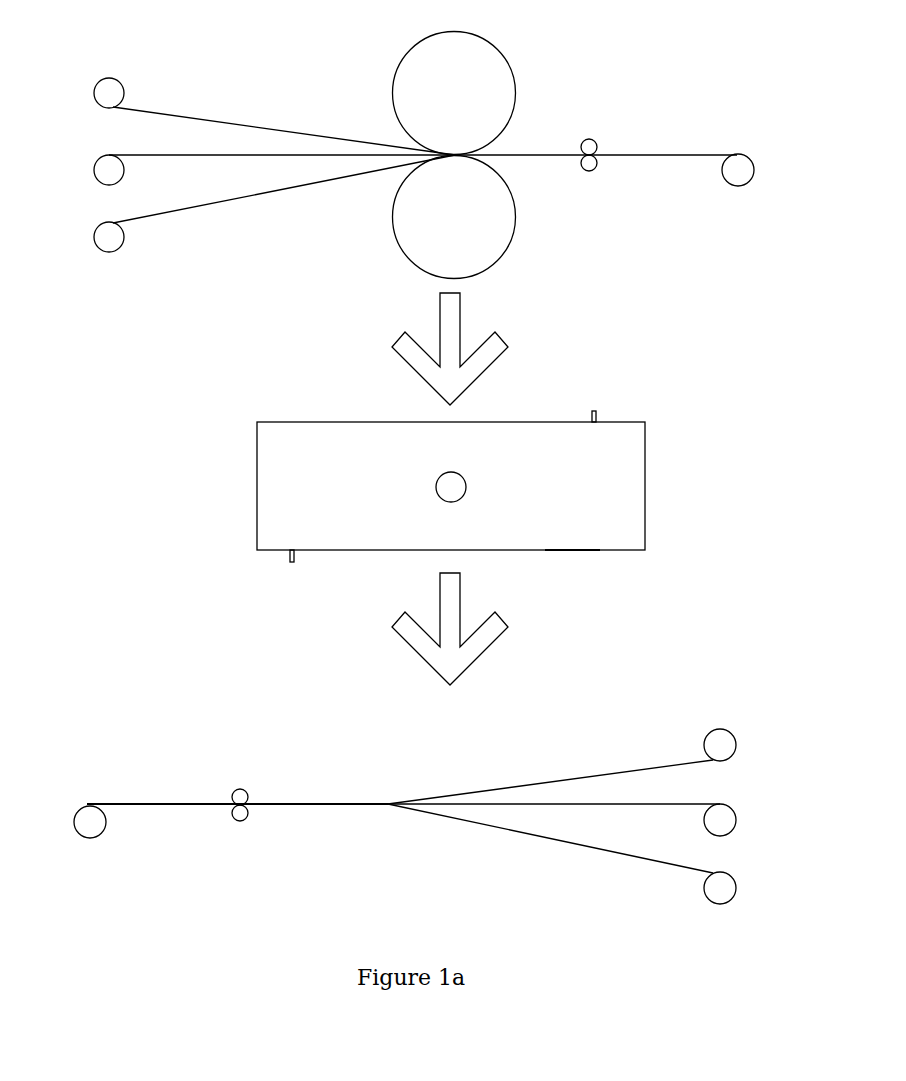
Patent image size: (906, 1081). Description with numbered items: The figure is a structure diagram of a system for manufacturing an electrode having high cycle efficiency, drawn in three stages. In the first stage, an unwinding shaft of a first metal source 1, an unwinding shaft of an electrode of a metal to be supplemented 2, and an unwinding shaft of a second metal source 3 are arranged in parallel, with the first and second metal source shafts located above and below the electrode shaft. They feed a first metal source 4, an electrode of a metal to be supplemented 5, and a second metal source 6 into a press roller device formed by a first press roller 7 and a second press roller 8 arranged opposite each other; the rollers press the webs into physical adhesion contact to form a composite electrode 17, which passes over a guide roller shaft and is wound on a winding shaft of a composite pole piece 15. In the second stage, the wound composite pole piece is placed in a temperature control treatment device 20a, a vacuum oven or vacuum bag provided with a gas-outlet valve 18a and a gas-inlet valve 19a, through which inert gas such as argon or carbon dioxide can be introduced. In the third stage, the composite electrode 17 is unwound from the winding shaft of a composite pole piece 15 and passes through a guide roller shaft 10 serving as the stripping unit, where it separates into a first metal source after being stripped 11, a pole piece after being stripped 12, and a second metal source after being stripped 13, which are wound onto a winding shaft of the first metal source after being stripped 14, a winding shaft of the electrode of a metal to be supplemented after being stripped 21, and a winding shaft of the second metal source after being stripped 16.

The unwinding shaft of a first metal source 1 is at (91, 74).
The unwinding shaft of an electrode of a metal to be supplemented 2 is at (82, 170).
The unwinding shaft of a second metal source 3 is at (102, 256).
The first metal source 4 is at (284, 119).
The electrode of a metal to be supplemented 5 is at (282, 145).
The second metal source 6 is at (284, 189).
The first press roller 7 is at (454, 93).
The second press roller 8 is at (454, 217).
The guide roller shaft 10 is at (229, 822).
The first metal source after being stripped 11 is at (550, 768).
The pole piece after being stripped 12 is at (554, 794).
The second metal source after being stripped 13 is at (550, 838).
The winding shaft of the first metal source after being stripped 14 is at (743, 738).
The winding shaft of a composite pole piece 15 is at (414, 517).
The winding shaft of the second metal source after being stripped 16 is at (738, 889).
The composite electrode 17 is at (412, 472).
The gas-outlet valve 18a is at (620, 405).
The gas-inlet valve 19a is at (293, 573).
The temperature control treatment device 20a is at (572, 563).
The winding shaft of the electrode of a metal to be supplemented after being strippe 21 is at (738, 821).